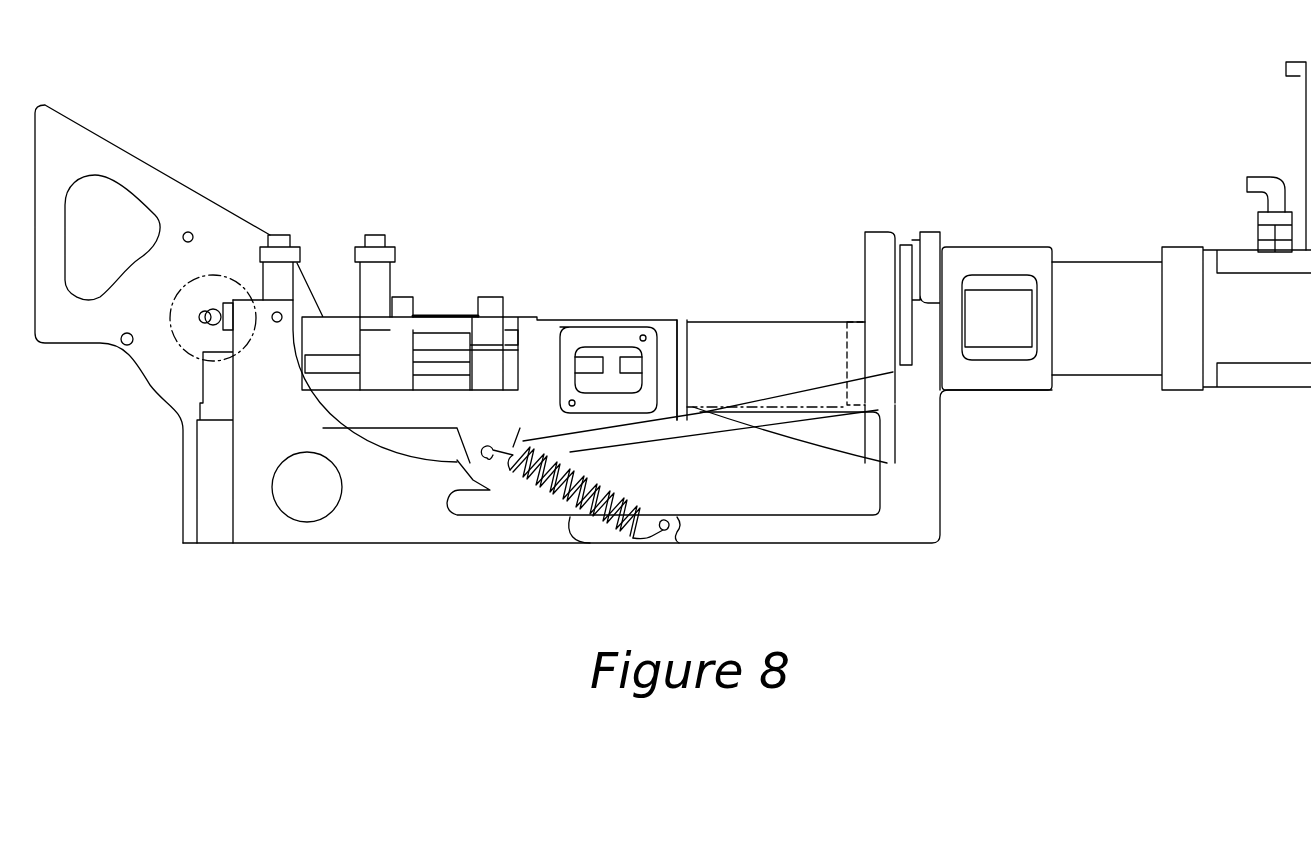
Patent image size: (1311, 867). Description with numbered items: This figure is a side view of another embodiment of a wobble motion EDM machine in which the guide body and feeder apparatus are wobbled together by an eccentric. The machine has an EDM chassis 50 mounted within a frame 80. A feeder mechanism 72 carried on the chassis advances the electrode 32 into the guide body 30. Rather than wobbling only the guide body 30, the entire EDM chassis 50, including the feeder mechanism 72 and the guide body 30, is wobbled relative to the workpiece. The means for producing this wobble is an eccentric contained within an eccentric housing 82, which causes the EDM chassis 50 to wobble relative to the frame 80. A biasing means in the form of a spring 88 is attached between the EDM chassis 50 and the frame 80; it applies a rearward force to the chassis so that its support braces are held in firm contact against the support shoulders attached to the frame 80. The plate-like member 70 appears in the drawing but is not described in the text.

The mounting plate 70 is at (127, 167).
The guide body 30 is at (210, 303).
The electrode 32 is at (325, 315).
The feeder mechanism 72 is at (413, 266).
The EDM chassis 50 is at (455, 272).
The eccentric housing 82 is at (998, 302).
The frame 80 is at (255, 462).
The spring 88 is at (627, 523).